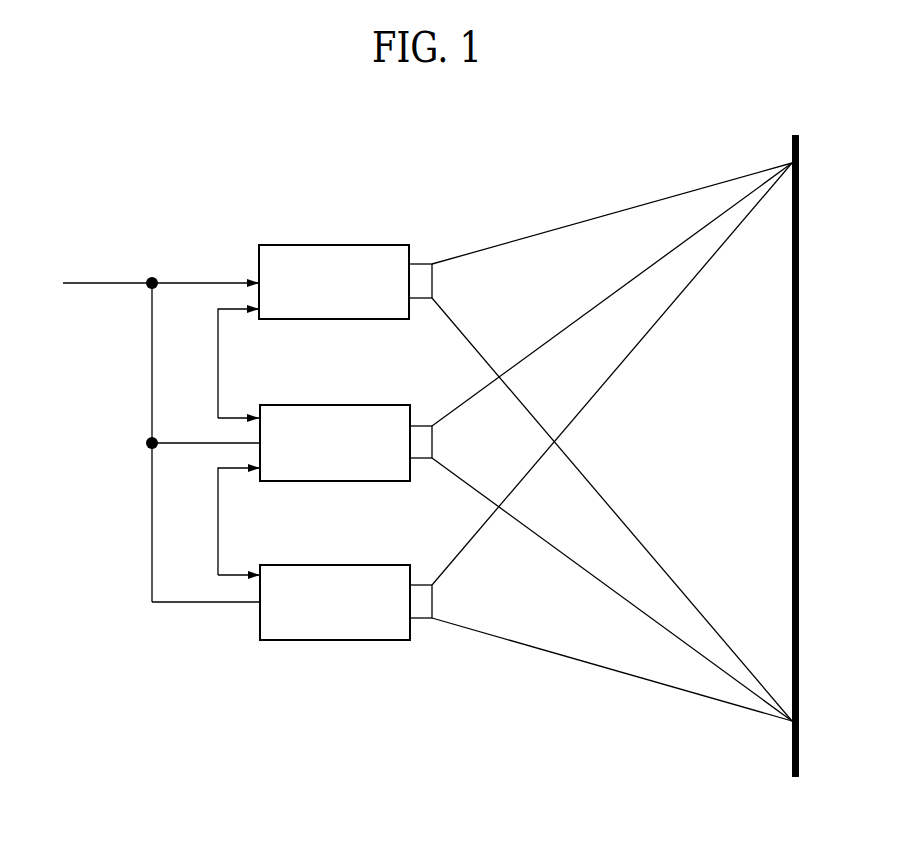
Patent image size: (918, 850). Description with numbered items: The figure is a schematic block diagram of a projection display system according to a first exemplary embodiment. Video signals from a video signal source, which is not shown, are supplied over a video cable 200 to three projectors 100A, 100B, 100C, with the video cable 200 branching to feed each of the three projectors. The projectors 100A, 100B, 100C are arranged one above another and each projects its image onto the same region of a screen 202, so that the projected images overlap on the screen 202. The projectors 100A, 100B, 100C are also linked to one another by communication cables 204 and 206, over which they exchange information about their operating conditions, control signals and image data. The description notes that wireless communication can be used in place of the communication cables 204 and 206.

The video cable 200 is at (109, 281).
The communication cable 204 is at (218, 370).
The communication cable 206 is at (218, 530).
The projector 100A is at (336, 244).
The projector 100B is at (336, 404).
The projector 100C is at (339, 564).
The screen 202 is at (792, 432).